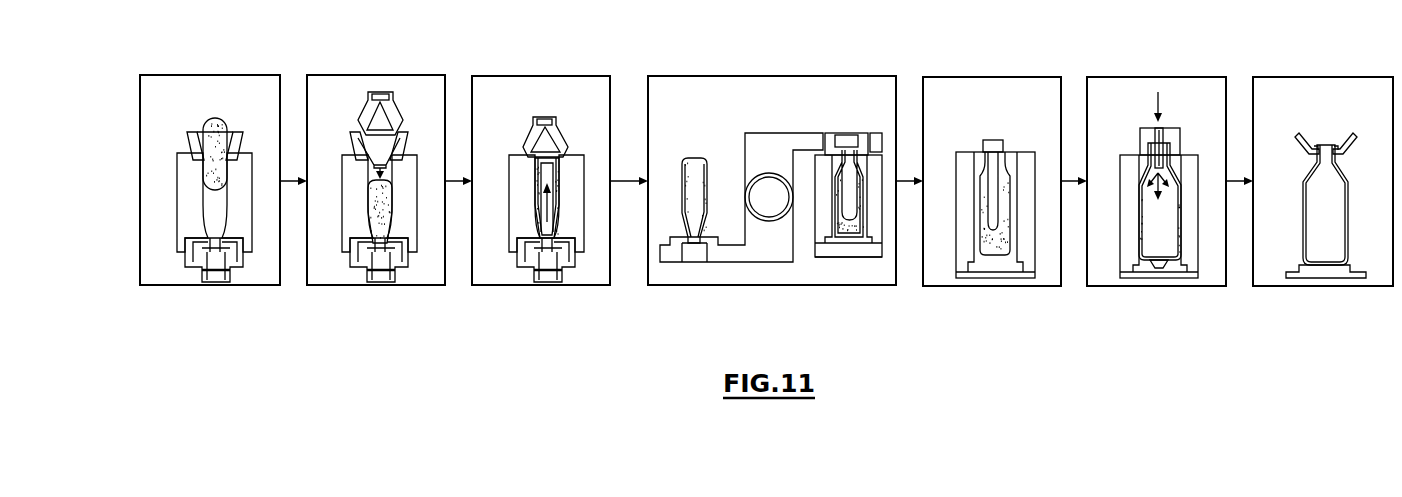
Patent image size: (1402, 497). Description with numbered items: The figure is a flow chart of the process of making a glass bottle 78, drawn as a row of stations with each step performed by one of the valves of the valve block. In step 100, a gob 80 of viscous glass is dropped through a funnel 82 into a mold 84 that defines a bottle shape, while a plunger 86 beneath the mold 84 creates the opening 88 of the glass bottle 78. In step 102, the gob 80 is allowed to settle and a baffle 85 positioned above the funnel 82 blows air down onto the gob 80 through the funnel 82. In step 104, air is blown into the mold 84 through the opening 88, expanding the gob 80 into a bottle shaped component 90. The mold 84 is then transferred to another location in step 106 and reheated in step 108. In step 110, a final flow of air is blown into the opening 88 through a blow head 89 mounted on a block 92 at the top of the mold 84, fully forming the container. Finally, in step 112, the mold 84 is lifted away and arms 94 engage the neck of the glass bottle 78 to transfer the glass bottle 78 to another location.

The glass bottle 78 is at (1303, 212).
The gob 80 is at (218, 118).
The funnel 82 is at (190, 145).
The mold 84 is at (193, 186).
The baffle 85 is at (393, 112).
The plunger 86 is at (216, 284).
The opening 88 is at (846, 150).
The blow head 89 is at (1163, 140).
The bottle shaped component 90 is at (559, 181).
The blow head block 92 is at (1142, 137).
The arms 94 is at (1351, 129).
The step 100 is at (232, 53).
The step 102 is at (397, 53).
The step 104 is at (564, 53).
The step 106 is at (795, 53).
The step 108 is at (1014, 53).
The step 110 is at (1179, 53).
The step 112 is at (1345, 53).